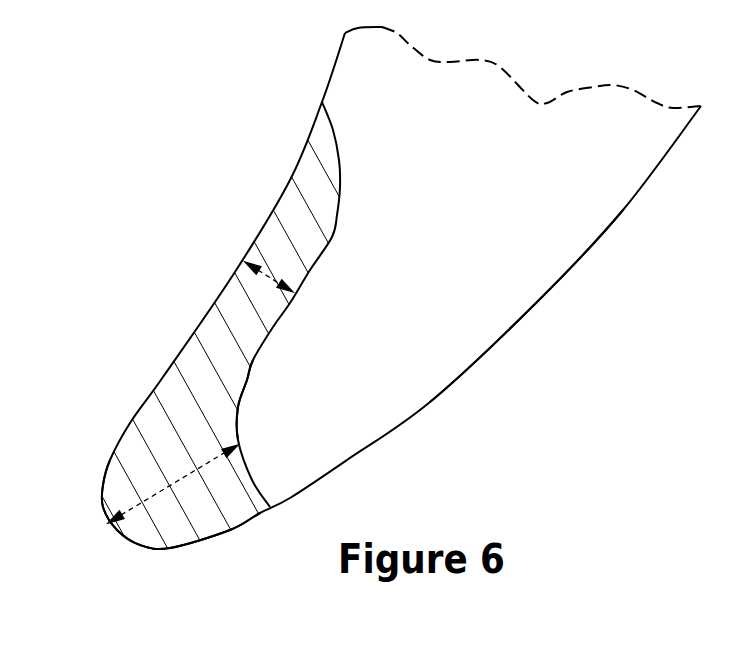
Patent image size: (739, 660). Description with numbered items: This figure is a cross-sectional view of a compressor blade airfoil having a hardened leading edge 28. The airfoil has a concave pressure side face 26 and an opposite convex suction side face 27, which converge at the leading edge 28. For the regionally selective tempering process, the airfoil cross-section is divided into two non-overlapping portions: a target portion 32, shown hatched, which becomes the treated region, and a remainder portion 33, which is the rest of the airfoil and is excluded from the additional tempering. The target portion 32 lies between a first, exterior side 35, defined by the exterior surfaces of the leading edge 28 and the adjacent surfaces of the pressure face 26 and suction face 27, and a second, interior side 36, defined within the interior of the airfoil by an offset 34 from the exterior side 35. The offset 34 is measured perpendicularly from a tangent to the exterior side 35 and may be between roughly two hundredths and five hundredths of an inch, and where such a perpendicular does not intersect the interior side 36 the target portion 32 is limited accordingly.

The pressure side face 26 is at (244, 263).
The suction side face 27 is at (480, 360).
The leading edge 28 is at (110, 523).
The target portion 32 is at (180, 408).
The remainder portion 33 is at (507, 270).
The offset 34 is at (265, 277).
The exterior side 35 is at (220, 537).
The interior side 36 is at (247, 377).